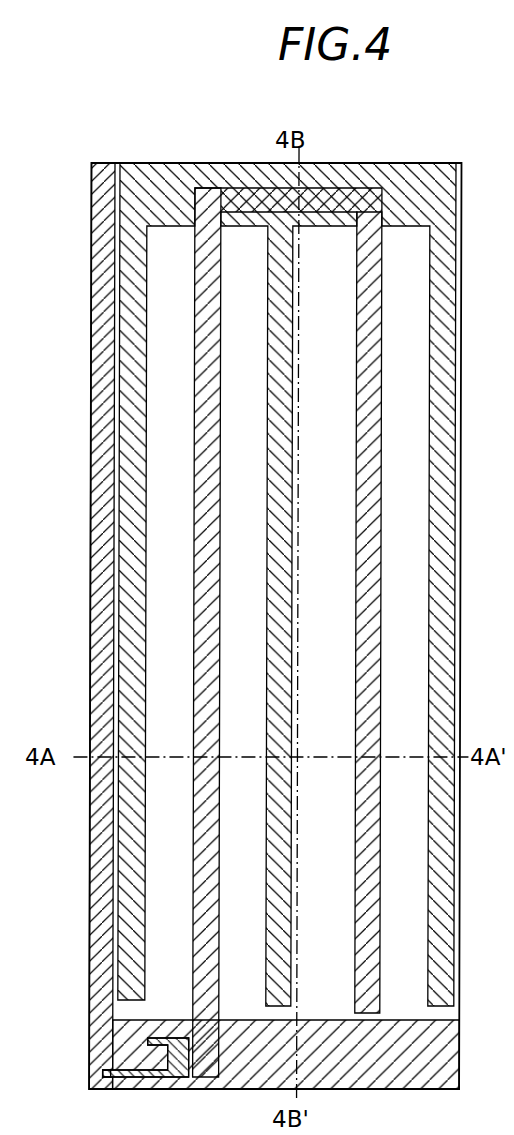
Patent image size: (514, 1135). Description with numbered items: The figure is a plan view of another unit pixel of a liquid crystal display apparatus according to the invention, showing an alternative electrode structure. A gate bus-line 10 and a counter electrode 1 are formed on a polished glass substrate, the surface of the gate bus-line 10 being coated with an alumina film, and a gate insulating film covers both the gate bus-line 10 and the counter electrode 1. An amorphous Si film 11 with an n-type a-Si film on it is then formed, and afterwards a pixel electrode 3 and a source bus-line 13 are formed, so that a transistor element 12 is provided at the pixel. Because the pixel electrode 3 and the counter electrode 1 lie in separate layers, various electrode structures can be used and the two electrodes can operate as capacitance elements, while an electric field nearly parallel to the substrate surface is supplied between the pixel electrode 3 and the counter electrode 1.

The counter electrode 1 is at (153, 206).
The pixel electrode 3 is at (200, 527).
The gate bus-line 10 is at (448, 1052).
The amorphous Si film 11 is at (183, 1047).
The transistor element 12 is at (217, 1092).
The source bus-line 13 is at (91, 312).